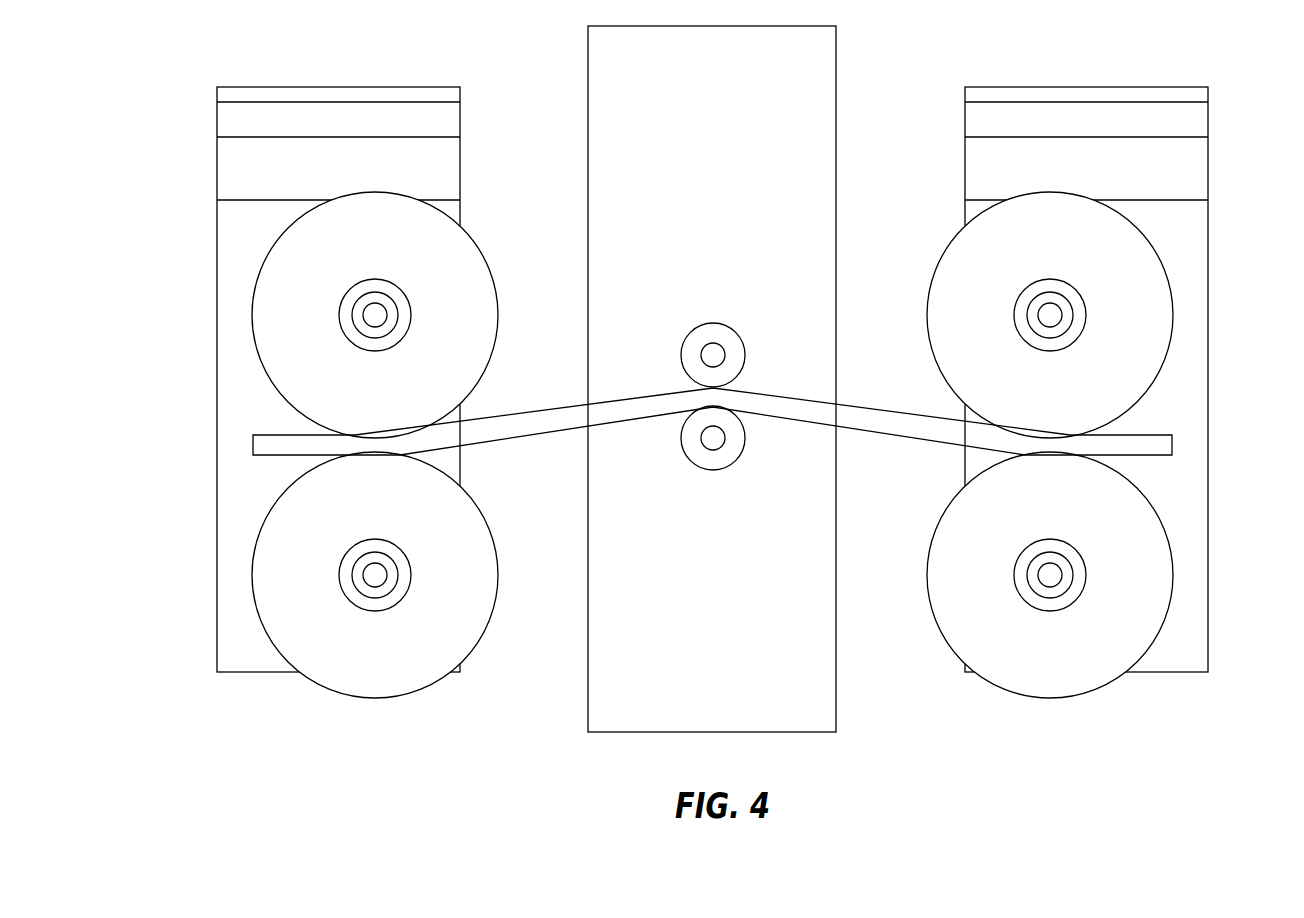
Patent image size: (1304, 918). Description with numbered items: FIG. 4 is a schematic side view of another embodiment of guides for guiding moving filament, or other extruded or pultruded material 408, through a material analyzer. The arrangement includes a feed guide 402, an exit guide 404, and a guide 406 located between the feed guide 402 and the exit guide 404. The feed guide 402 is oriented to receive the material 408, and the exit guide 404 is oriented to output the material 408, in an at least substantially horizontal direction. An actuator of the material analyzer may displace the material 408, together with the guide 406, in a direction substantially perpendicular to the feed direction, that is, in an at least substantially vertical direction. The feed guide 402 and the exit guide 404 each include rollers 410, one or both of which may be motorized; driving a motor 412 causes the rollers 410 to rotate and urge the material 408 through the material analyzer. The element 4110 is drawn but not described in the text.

The feed guide 402 is at (265, 317).
The exit guide 404 is at (1160, 316).
The guide 406 is at (735, 356).
The material 408 is at (560, 405).
The rollers 410 is at (265, 577).
The motor 412 is at (373, 575).
The roll hub axle 4110 is at (1052, 575).